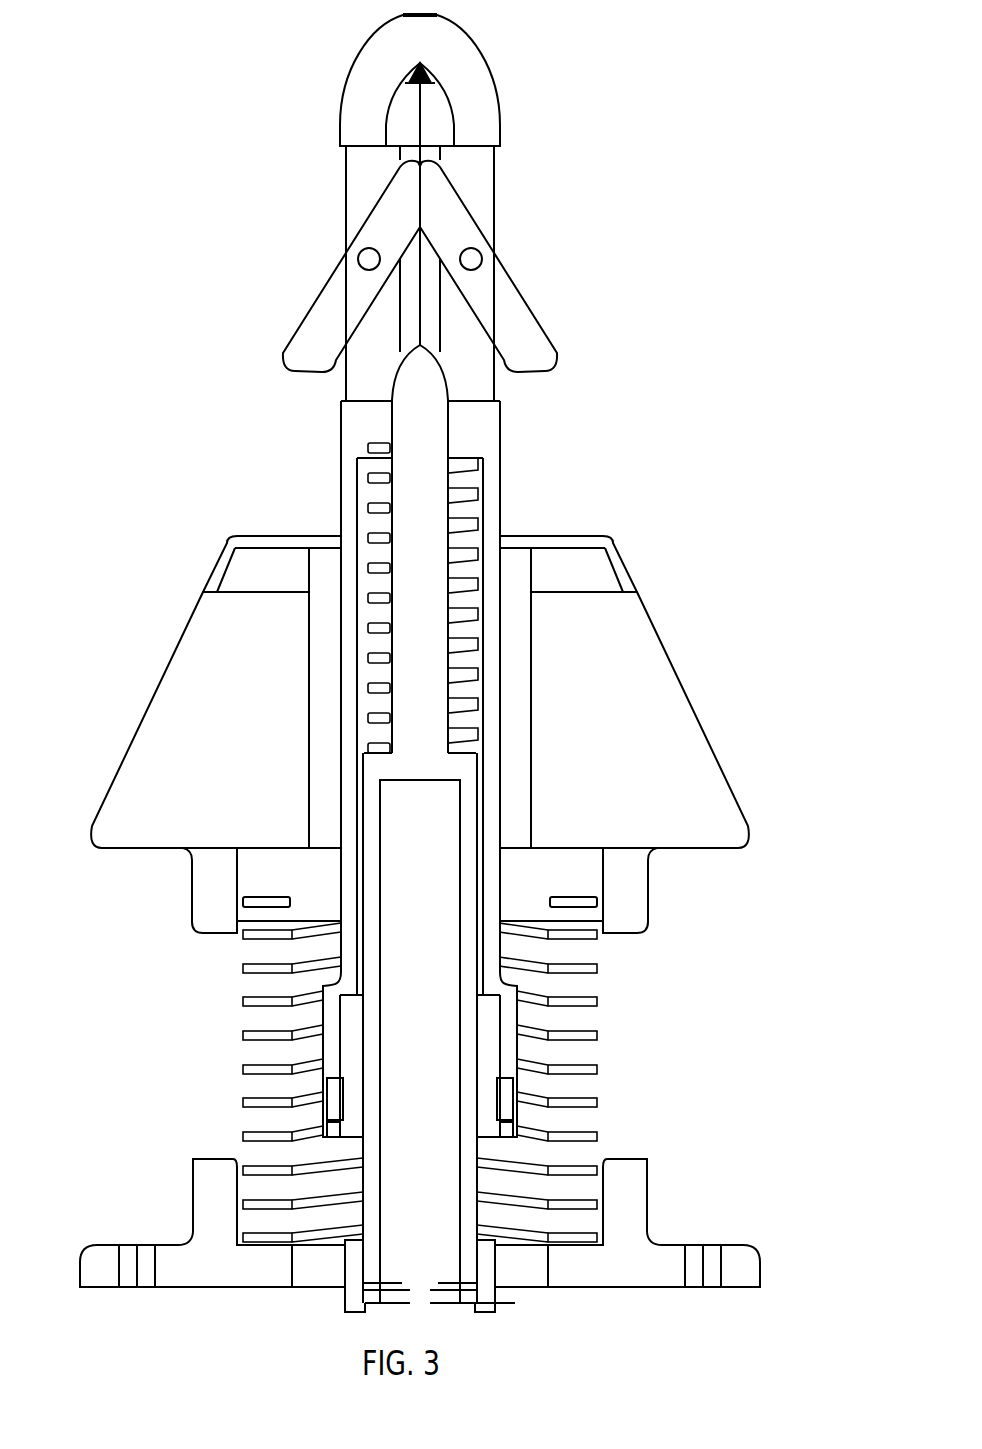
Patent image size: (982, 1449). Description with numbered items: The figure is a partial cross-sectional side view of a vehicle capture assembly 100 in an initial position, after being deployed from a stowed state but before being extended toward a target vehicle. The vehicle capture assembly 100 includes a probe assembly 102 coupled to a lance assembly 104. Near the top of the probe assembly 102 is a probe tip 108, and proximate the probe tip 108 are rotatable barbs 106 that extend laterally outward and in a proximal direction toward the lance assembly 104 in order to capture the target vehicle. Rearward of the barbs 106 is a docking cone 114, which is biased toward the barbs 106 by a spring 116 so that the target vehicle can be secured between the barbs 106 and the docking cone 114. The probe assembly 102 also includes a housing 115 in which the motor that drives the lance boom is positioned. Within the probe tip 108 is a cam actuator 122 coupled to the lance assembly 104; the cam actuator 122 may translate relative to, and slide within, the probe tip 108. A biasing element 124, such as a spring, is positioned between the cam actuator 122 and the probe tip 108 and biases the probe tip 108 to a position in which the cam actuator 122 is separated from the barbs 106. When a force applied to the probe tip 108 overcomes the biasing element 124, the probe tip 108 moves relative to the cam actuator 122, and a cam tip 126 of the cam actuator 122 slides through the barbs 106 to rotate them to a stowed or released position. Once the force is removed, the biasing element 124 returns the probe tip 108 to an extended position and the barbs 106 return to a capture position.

The vehicle capture assembly 100 is at (172, 115).
The probe assembly 102 is at (690, 243).
The lance assembly 104 is at (205, 1130).
The barbs 106 is at (323, 319).
The probe tip 108 is at (385, 49).
The docking cone 114 is at (203, 691).
The housing 115 is at (214, 1195).
The spring 116 is at (272, 958).
The cam actuator 122 is at (422, 424).
The biasing element 124 is at (392, 468).
The cam tip 126 is at (420, 351).